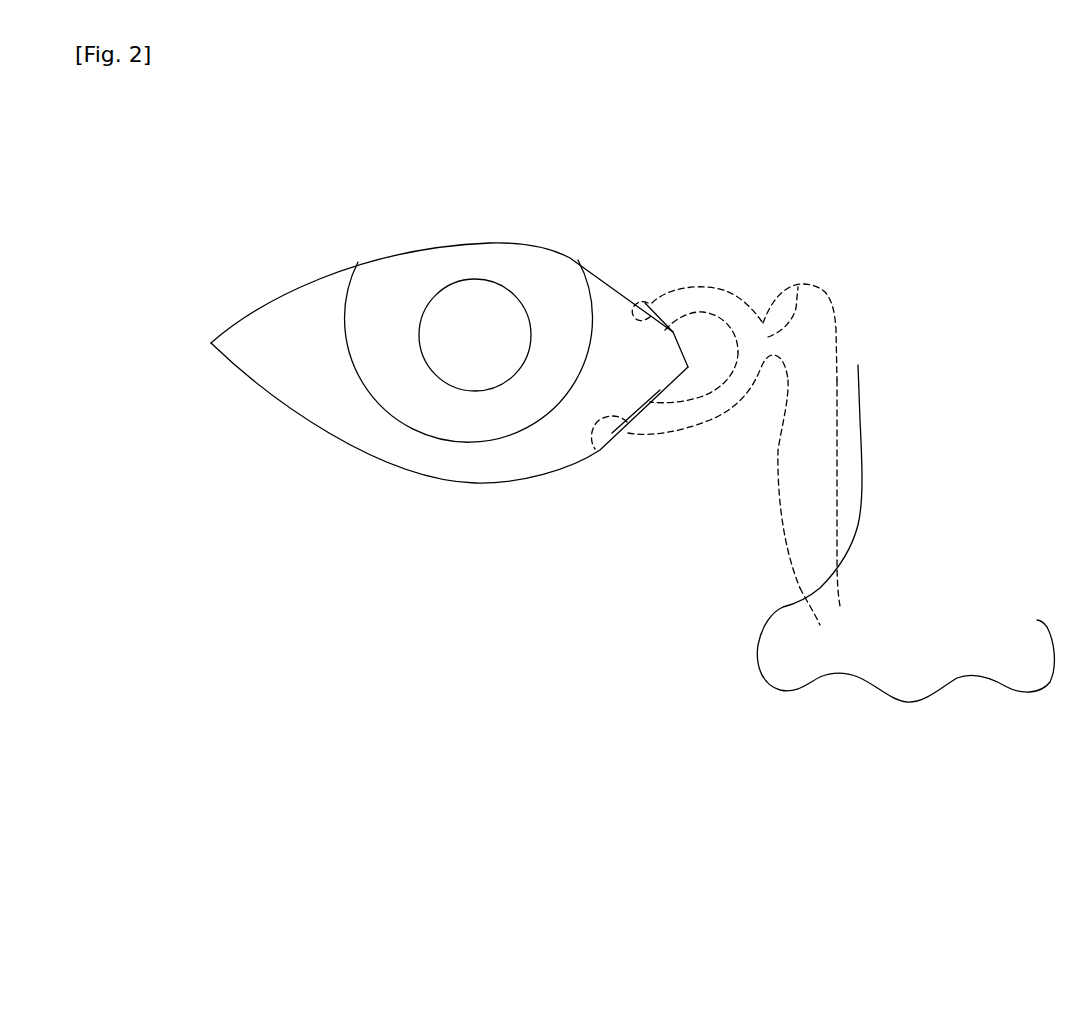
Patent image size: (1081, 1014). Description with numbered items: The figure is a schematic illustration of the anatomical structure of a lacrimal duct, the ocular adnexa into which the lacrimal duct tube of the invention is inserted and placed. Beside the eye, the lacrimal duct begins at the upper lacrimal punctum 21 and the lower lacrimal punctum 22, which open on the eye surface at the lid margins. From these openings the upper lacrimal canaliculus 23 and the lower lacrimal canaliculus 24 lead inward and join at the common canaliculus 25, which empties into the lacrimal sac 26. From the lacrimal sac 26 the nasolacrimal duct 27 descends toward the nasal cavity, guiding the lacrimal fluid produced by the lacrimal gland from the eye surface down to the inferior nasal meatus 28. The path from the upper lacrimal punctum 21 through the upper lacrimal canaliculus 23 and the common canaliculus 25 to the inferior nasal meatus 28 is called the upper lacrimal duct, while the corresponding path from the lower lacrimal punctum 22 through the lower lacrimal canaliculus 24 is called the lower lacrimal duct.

The upper lacrimal punctum 21 is at (631, 302).
The lower lacrimal punctum 22 is at (594, 448).
The upper lacrimal canaliculus 23 is at (694, 290).
The lower lacrimal canaliculus 24 is at (696, 410).
The common canaliculus 25 is at (801, 300).
The lacrimal sac 26 is at (812, 362).
The nasolacrimal duct 27 is at (808, 475).
The inferior nasal meatus 28 is at (827, 594).